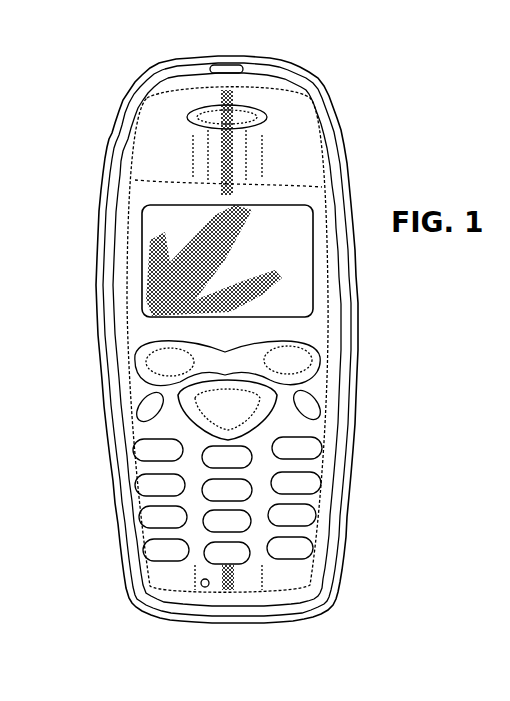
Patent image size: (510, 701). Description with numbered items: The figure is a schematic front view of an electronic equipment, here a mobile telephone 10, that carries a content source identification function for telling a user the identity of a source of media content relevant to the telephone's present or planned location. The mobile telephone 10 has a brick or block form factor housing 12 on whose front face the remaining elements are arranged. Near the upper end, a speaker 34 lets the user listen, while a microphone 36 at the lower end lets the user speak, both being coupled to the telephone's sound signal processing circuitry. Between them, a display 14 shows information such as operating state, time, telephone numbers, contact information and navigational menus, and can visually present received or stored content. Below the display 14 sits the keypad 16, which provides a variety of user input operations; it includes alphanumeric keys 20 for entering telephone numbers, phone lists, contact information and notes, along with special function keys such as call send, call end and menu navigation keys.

The mobile telephone 10 is at (78, 74).
The housing 12 is at (115, 147).
The display 14 is at (152, 230).
The keypad 16 is at (126, 508).
The alphanumeric keys 20 is at (152, 447).
The speaker 34 is at (203, 125).
The microphone 36 is at (207, 586).